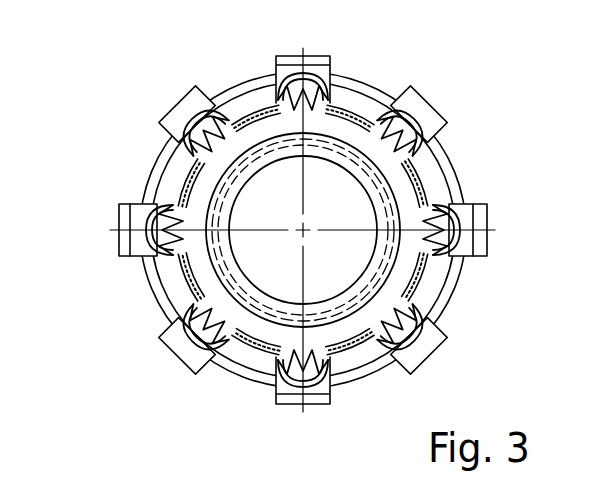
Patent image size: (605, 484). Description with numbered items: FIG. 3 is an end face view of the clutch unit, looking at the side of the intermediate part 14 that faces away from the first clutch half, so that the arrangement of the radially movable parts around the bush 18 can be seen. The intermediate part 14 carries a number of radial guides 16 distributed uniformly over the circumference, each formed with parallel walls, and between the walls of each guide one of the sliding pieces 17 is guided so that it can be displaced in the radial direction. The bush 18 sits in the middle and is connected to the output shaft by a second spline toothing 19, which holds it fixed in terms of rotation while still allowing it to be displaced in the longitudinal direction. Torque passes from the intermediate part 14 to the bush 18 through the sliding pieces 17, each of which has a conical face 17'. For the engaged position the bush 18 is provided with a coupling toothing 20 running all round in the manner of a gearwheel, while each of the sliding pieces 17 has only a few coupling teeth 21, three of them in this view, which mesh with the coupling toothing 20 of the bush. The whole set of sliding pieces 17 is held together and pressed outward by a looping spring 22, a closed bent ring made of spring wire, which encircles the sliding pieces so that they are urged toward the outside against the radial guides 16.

The intermediate part 14 is at (435, 182).
The radial guides 16 is at (327, 62).
The sliding pieces 17 is at (97, 195).
The conical face 17' is at (83, 231).
The bush 18 is at (230, 110).
The second spline toothing 19 is at (218, 172).
The coupling toothing 20 is at (182, 308).
The coupling teeth 21 is at (158, 330).
The looping spring 22 is at (428, 272).